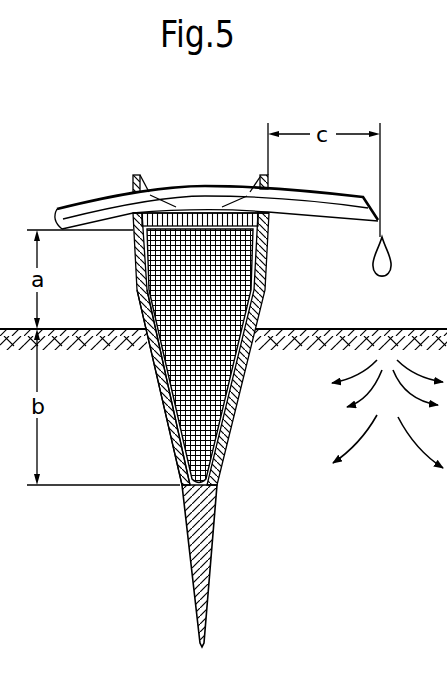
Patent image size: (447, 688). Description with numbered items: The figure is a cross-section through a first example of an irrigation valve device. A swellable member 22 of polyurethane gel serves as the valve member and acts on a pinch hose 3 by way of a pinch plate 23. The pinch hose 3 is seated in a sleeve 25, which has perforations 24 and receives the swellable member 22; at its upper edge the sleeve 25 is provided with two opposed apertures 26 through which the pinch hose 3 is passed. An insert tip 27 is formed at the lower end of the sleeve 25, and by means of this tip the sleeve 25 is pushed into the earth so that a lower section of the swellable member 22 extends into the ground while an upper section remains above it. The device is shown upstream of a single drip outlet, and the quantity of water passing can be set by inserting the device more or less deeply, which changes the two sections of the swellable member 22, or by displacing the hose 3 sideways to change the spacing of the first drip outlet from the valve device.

The pinch hose 3 is at (75, 210).
The swellable member 22 is at (245, 281).
The pinch plate 23 is at (185, 212).
The perforations 24 is at (157, 379).
The sleeve 25 is at (133, 292).
The opposed apertures 26 is at (134, 190).
The insert tip 27 is at (208, 556).